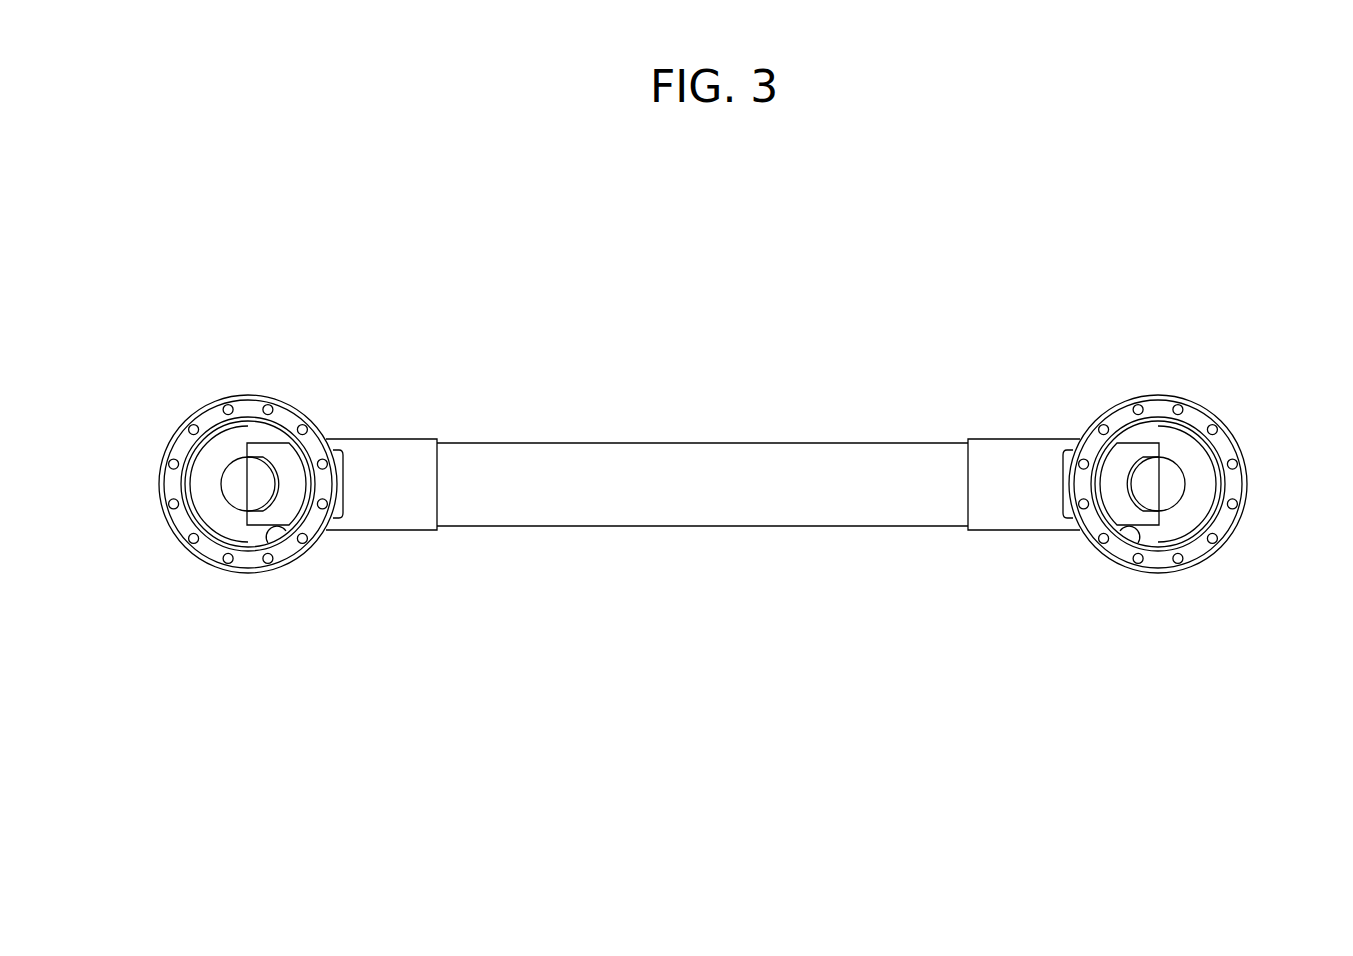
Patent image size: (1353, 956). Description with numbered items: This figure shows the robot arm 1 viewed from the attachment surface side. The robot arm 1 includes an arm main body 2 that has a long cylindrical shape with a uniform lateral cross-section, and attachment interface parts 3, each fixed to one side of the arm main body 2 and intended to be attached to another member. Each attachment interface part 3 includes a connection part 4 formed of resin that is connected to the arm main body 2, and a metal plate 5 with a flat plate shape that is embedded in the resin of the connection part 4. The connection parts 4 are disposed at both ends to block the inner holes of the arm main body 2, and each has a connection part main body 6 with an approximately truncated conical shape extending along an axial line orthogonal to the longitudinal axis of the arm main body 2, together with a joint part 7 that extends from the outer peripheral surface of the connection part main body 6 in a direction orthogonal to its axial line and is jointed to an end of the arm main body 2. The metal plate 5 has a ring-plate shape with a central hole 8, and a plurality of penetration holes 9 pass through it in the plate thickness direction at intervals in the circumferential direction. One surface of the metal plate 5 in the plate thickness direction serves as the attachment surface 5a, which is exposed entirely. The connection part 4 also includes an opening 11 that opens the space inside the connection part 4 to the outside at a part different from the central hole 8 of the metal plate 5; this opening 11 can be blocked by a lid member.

The robot arm 1 is at (792, 292).
The arm main body 2 is at (702, 428).
The attachment interface part 3 is at (252, 378).
The connection part 4 is at (195, 481).
The metal plate 5 is at (248, 582).
The attachment surface 5a is at (213, 553).
The connection part main body 6 is at (210, 462).
The joint part 7 is at (388, 458).
The central hole 8 is at (273, 542).
The penetration hole 9 is at (172, 507).
The opening 11 is at (236, 479).